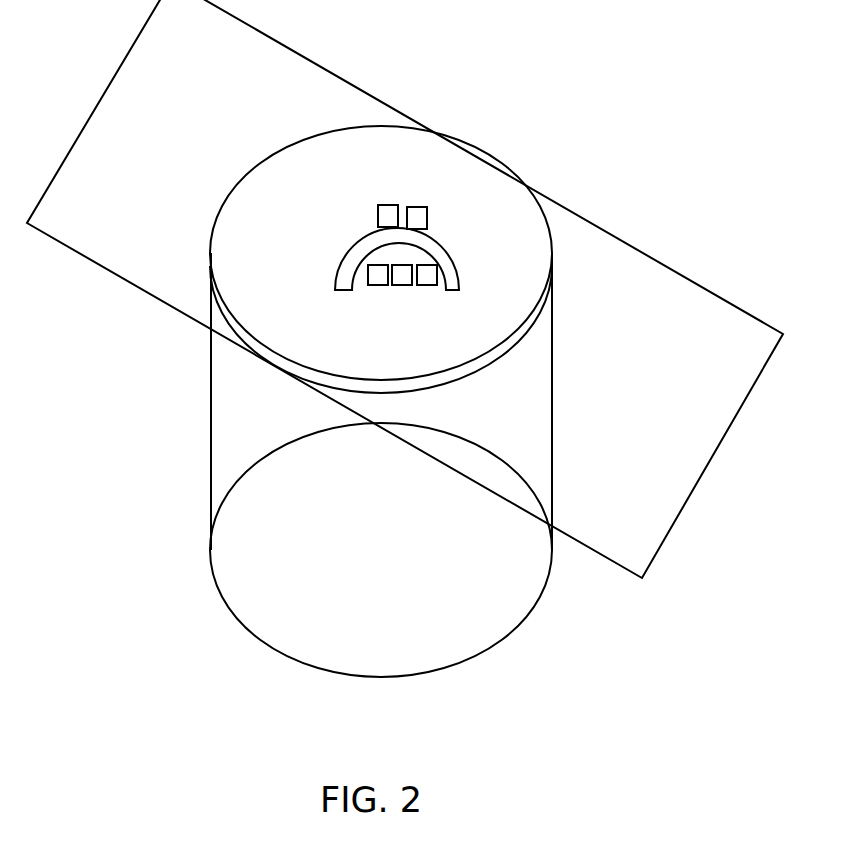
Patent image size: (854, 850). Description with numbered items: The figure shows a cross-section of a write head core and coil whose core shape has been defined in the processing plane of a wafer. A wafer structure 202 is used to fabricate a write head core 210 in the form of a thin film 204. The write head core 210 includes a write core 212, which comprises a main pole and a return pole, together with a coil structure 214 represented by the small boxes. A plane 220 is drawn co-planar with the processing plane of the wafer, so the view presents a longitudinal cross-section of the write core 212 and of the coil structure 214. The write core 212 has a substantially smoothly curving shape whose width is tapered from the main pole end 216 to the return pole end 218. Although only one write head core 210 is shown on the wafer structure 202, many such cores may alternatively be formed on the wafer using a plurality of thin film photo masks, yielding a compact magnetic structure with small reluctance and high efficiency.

The wafer structure 202 is at (210, 422).
The thin film 204 is at (540, 308).
The write head core 210 is at (367, 168).
The write core 212 is at (440, 245).
The coil structure 214 is at (398, 205).
The main pole end 216 is at (444, 297).
The return pole end 218 is at (326, 276).
The plane 220 is at (200, 33).